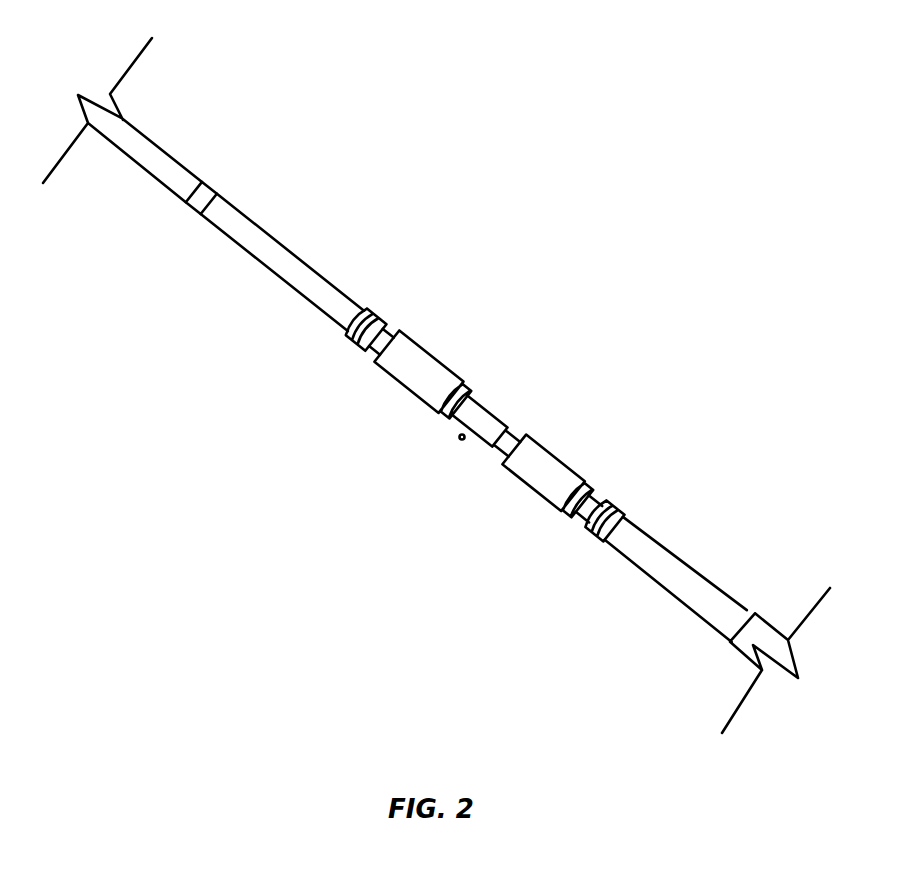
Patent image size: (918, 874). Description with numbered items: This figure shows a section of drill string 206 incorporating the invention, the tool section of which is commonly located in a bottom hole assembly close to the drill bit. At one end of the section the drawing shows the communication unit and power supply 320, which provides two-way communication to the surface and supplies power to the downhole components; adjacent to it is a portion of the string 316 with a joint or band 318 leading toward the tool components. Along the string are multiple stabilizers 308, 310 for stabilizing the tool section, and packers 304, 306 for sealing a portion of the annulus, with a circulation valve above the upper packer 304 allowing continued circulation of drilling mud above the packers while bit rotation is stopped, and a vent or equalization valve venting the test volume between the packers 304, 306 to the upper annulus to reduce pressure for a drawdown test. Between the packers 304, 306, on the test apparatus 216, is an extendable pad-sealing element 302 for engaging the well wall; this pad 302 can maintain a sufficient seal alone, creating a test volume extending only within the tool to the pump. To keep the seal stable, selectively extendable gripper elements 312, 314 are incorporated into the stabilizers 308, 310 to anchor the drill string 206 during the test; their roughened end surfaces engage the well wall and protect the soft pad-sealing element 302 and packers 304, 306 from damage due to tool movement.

The drill string 206 is at (131, 389).
The test apparatus 216 is at (507, 404).
The pad-sealing element 302 is at (457, 440).
The upper packer 304 is at (456, 354).
The lower packer 306 is at (577, 451).
The stabilizer 308 is at (370, 313).
The stabilizer 310 is at (605, 502).
The gripper element 312 is at (394, 297).
The gripper element 314 is at (636, 496).
The tube section 316 is at (278, 217).
The band / joint 318 is at (227, 176).
The communication unit and power supply 320 is at (170, 131).